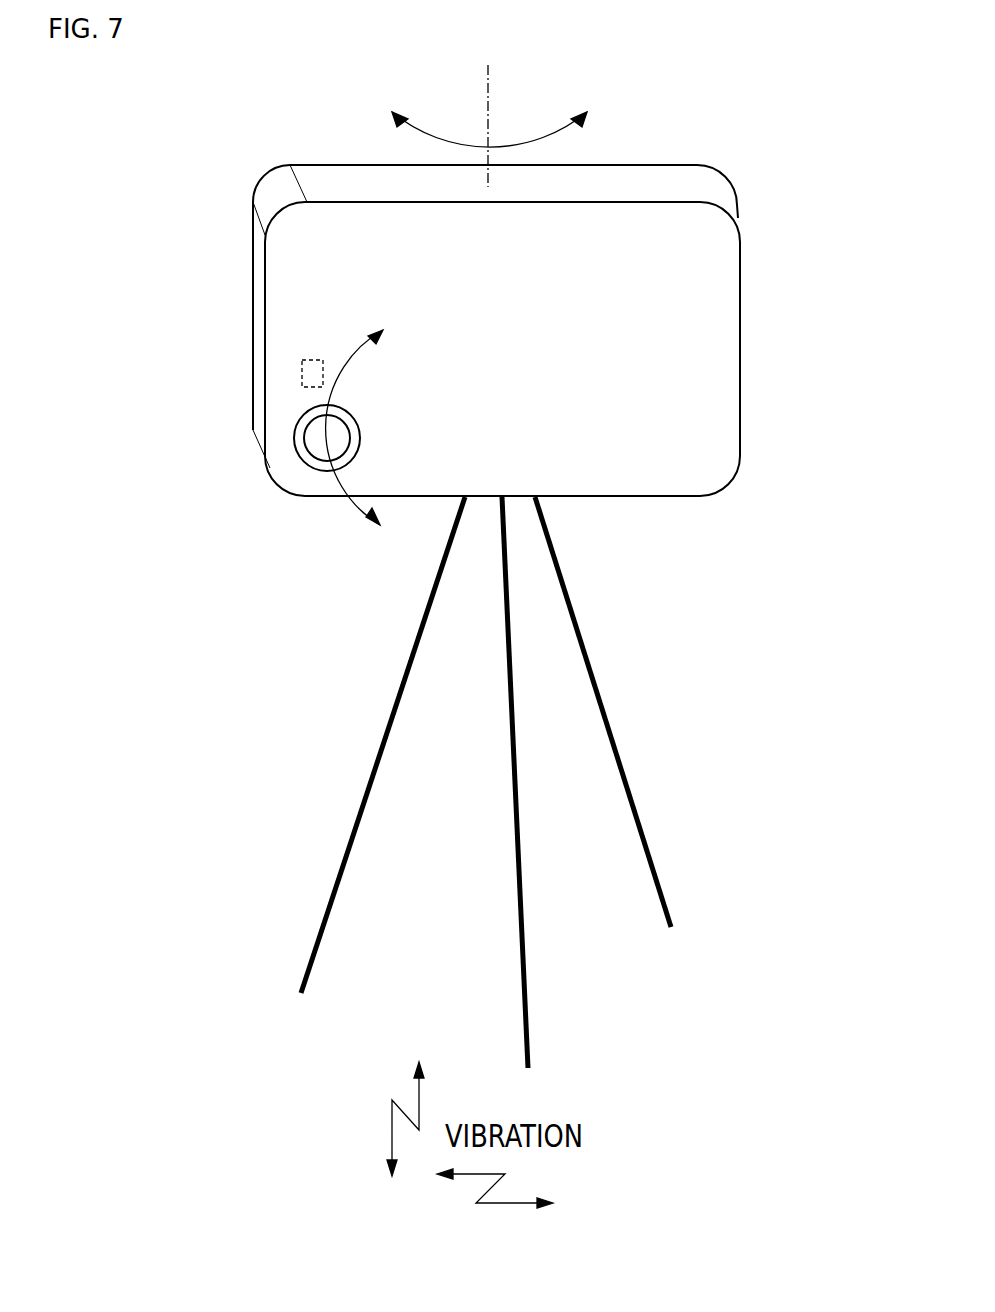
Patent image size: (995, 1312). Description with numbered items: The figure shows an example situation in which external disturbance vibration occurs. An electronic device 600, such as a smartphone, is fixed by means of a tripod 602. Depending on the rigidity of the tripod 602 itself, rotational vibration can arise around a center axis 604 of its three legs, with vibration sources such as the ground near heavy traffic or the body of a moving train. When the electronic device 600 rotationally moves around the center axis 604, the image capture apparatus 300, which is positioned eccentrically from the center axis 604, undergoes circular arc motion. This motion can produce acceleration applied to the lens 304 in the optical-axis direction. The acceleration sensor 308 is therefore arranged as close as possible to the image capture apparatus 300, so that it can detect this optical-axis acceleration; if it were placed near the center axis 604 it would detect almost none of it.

The image capture apparatus 300 is at (290, 408).
The lens 304 is at (313, 438).
The acceleration sensor 308 is at (313, 370).
The electronic device 600 is at (667, 228).
The tripod 602 is at (605, 695).
The center axis 604 is at (488, 82).